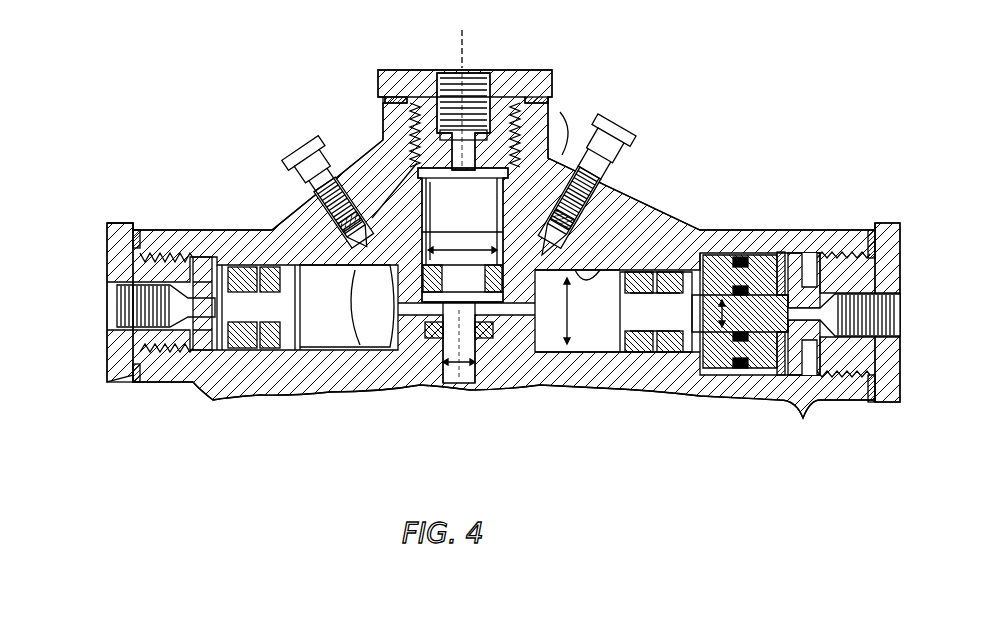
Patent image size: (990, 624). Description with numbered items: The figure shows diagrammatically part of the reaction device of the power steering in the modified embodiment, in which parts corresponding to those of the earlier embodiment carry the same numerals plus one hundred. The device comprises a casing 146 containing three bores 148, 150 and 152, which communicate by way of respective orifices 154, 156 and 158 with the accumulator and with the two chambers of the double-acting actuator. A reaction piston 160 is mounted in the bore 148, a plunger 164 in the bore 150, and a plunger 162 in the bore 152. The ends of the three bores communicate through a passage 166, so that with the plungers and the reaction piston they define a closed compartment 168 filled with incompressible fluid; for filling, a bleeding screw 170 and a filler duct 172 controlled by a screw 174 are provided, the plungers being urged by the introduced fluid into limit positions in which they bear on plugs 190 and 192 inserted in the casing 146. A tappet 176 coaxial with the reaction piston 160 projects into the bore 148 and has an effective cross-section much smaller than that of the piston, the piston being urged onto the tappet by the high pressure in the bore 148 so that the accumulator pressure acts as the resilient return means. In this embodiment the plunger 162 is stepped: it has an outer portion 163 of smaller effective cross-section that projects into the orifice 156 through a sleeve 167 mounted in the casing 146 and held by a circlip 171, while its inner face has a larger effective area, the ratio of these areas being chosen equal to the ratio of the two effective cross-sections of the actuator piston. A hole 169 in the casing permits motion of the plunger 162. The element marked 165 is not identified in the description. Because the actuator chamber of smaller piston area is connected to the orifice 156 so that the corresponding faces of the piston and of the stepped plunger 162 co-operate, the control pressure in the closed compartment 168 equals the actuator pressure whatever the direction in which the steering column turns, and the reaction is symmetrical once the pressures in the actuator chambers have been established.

The casing 146 is at (162, 230).
The bore 148 is at (553, 160).
The bore 150 is at (603, 262).
The bore 152 is at (382, 366).
The orifice 154 is at (452, 80).
The orifice 156 is at (898, 295).
The orifice 158 is at (107, 300).
The reaction piston 160 is at (433, 247).
The stepped plunger 162 is at (645, 300).
The outer portion of plunger 163 is at (773, 313).
The plunger 164 is at (240, 308).
The right piston 165 is at (655, 315).
The passage 166 is at (530, 300).
The sleeve 167 is at (763, 273).
The closed compartment 168 is at (327, 334).
The hole 169 is at (700, 243).
The bleeding screw 170 is at (615, 203).
The circlip 171 is at (810, 232).
The filler duct 172 is at (380, 190).
The screw 174 is at (307, 188).
The tappet 176 is at (465, 372).
The plug 190 is at (878, 228).
The plug 192 is at (132, 367).